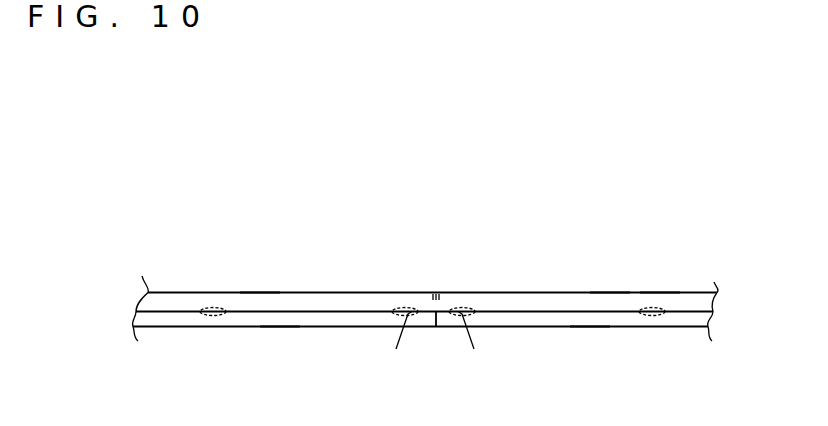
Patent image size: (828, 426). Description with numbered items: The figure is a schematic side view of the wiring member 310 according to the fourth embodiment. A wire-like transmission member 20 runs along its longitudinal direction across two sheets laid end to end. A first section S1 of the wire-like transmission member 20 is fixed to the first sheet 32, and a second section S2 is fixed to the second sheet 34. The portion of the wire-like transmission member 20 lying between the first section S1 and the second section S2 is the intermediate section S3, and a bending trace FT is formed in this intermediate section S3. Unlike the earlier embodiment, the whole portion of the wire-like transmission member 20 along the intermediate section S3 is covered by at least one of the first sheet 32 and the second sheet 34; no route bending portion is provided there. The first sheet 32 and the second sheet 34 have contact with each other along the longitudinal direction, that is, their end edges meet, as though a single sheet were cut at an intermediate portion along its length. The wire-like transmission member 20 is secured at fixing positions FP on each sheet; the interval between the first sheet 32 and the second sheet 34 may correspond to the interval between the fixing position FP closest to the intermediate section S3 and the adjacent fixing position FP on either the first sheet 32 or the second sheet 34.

The wiring member 310 is at (244, 147).
The wire-like transmission member 20 is at (608, 292).
The first sheet 32 is at (280, 327).
The second sheet 34 is at (590, 327).
The first section S1 is at (256, 284).
The second section S2 is at (658, 281).
The intermediate section S3 is at (436, 332).
The bending trace FT is at (436, 292).
The fixing position FP is at (396, 349).